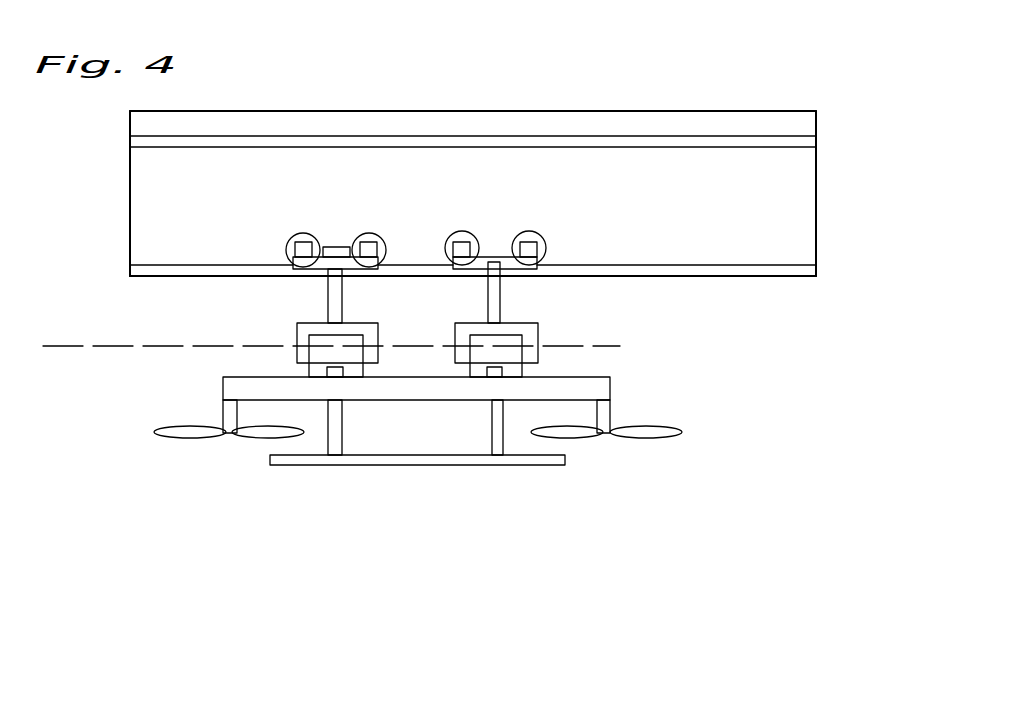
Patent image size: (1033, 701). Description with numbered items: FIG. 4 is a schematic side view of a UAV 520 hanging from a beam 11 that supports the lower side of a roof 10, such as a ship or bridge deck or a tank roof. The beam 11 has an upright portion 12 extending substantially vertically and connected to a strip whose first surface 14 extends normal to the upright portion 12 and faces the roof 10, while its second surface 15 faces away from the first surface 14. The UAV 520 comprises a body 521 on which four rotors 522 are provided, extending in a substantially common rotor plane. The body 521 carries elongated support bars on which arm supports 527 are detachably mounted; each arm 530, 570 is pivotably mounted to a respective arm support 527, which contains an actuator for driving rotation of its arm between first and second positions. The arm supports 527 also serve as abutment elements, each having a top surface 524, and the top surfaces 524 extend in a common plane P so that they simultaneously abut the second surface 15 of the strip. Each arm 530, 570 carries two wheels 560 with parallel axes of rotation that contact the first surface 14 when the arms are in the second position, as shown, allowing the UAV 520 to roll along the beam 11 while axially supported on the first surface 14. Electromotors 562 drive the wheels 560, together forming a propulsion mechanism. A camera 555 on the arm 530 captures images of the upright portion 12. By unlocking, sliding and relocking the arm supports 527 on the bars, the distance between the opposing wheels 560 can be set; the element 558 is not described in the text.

The roof 10 is at (748, 127).
The beam 11 is at (829, 184).
The upright portion 12 is at (776, 200).
The first surface 14 is at (789, 266).
The second surface 15 is at (762, 270).
The UAV 520 is at (238, 466).
The body 521 is at (597, 392).
The rotors 522 is at (168, 428).
The top surface 524 is at (352, 337).
The arm supports 527 is at (480, 362).
The arm 530 is at (330, 305).
The camera 555 is at (337, 250).
The light emitting element 558 is at (547, 253).
The wheels 560 is at (287, 250).
The electromotors 562 is at (302, 246).
The arm 570 is at (497, 310).
The reference plane P is at (82, 346).